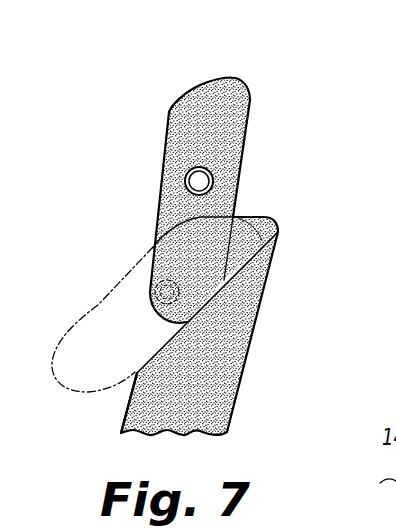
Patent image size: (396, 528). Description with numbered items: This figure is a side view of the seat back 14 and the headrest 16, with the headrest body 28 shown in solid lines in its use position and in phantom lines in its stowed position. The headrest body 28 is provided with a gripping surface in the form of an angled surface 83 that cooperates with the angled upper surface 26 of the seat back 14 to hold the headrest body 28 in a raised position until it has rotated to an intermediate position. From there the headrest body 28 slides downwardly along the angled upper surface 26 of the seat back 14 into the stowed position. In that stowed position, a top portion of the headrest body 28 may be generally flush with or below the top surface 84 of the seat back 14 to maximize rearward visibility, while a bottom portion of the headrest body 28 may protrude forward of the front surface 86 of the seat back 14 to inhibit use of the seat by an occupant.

The seat back 14 is at (297, 313).
The headrest 16 is at (290, 147).
The headrest body 28 is at (263, 88).
The angled surface 83 is at (203, 307).
The top surface 84 is at (247, 213).
The angled upper surface 26 is at (158, 343).
The front surface 86 is at (127, 406).